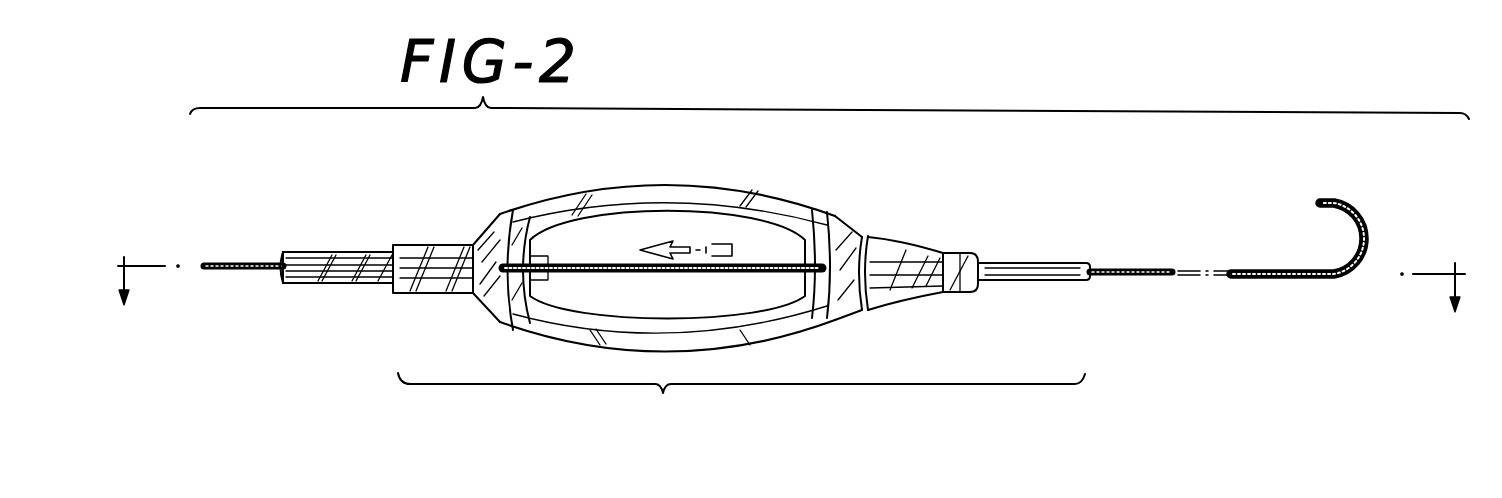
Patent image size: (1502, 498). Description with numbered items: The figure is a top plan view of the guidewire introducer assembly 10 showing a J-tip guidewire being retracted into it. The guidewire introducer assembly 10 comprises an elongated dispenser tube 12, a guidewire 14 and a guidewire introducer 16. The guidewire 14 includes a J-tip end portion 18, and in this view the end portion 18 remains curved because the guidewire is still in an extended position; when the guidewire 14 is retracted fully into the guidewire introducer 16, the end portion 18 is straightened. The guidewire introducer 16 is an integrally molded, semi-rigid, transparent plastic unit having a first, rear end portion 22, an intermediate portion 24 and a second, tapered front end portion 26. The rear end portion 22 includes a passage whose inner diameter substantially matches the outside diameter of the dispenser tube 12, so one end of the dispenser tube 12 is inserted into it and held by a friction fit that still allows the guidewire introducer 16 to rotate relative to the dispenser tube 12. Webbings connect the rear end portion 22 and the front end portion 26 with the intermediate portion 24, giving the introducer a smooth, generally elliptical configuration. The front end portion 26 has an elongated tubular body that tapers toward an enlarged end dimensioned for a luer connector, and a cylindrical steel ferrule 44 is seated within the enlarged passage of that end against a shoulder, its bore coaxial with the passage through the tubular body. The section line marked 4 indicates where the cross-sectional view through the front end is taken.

The section line 4- 4 is at (794, 281).
The guidewire introducer assembly 10 is at (322, 382).
The dispenser tube 12 is at (338, 285).
The guidewire 14 is at (218, 272).
The guidewire introducer 16 is at (739, 268).
The J-tip end portion 18 is at (1340, 205).
The rear end portion 22 is at (429, 233).
The intermediate portion 24 is at (633, 178).
The front end portion 26 is at (903, 224).
The ferrule 44 is at (1050, 281).